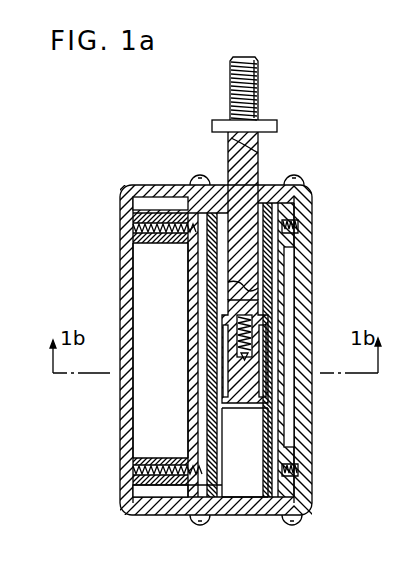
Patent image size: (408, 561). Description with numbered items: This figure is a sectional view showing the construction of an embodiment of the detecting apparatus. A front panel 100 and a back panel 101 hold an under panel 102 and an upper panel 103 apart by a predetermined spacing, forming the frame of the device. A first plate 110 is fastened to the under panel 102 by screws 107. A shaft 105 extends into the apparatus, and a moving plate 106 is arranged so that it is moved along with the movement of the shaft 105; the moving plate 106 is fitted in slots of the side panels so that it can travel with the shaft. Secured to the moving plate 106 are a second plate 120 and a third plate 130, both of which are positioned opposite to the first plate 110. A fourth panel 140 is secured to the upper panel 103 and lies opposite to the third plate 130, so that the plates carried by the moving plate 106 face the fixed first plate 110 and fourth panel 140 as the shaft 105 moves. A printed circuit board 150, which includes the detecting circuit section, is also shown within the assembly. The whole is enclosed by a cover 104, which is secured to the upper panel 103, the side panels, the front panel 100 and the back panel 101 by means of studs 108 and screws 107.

The front panel 100 is at (181, 188).
The back panel 101 is at (268, 505).
The under panel 102 is at (302, 240).
The upper panel 103 is at (222, 500).
The cover 104 is at (124, 268).
The shaft 105 is at (233, 93).
The moving plate 106 is at (246, 406).
The screws 107 is at (153, 188).
The studs 108 is at (165, 245).
The first plate 110 is at (280, 282).
The second plate 120 is at (262, 382).
The third plate 130 is at (227, 342).
The fourth panel 140 is at (208, 427).
The printed circuit board 150 is at (193, 375).